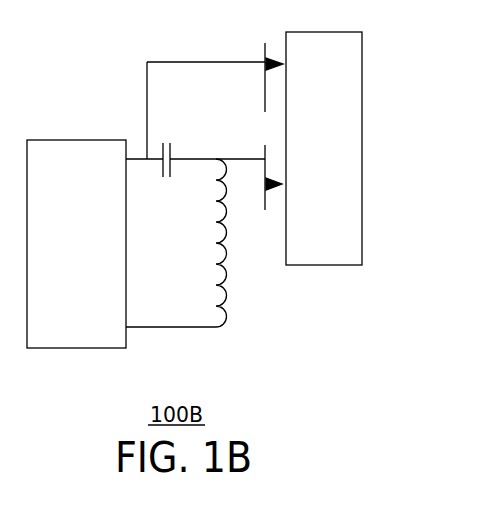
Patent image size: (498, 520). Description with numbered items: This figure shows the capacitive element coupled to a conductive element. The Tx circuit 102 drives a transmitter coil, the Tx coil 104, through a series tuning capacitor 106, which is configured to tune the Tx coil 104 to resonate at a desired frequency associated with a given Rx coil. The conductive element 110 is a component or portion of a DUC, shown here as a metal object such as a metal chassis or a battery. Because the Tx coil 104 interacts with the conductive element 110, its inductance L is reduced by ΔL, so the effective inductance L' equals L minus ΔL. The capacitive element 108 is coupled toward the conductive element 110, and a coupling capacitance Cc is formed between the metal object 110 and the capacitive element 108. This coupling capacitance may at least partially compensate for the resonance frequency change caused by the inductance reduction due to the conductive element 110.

The Tx circuit 102 is at (68, 140).
The Tx coil 104 is at (222, 284).
The tuning capacitor 106 is at (162, 144).
The capacitive element 108 is at (262, 176).
The conductive element 110 is at (323, 32).